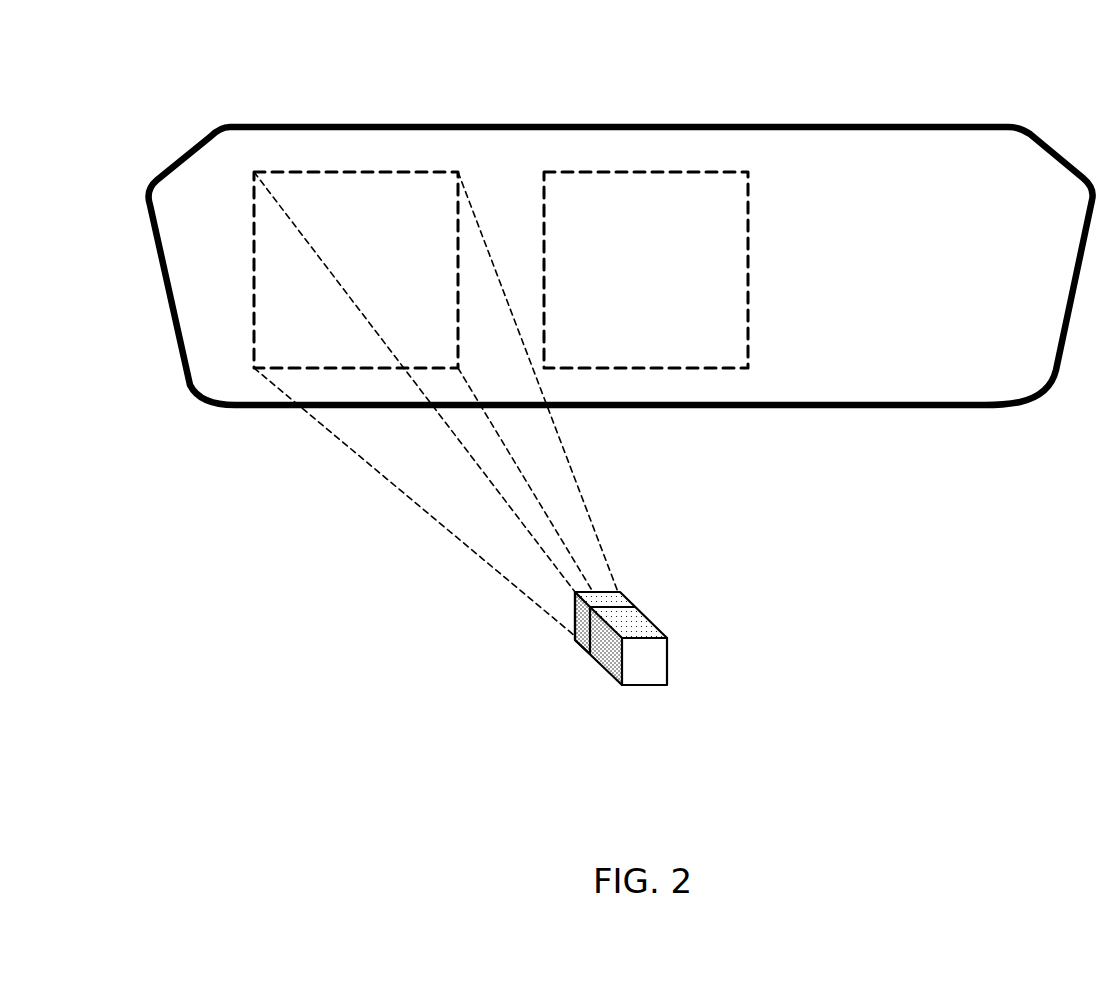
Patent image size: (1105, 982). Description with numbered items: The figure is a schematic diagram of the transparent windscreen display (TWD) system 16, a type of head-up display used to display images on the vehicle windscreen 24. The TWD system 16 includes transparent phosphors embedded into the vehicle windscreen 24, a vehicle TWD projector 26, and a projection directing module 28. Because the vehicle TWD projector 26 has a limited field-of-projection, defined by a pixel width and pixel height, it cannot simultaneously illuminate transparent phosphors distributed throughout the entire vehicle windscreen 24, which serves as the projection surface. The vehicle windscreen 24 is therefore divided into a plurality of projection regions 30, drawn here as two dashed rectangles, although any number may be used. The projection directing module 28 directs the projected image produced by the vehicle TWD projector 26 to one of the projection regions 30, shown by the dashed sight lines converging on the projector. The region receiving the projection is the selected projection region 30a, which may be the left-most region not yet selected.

The transparent windscreen display system 16 is at (130, 101).
The vehicle windscreen 24 is at (840, 408).
The vehicle TWD projector 26 is at (662, 657).
The projection directing module 28 is at (580, 638).
The projection regions 30 is at (600, 172).
The selected projection region 30a is at (347, 172).